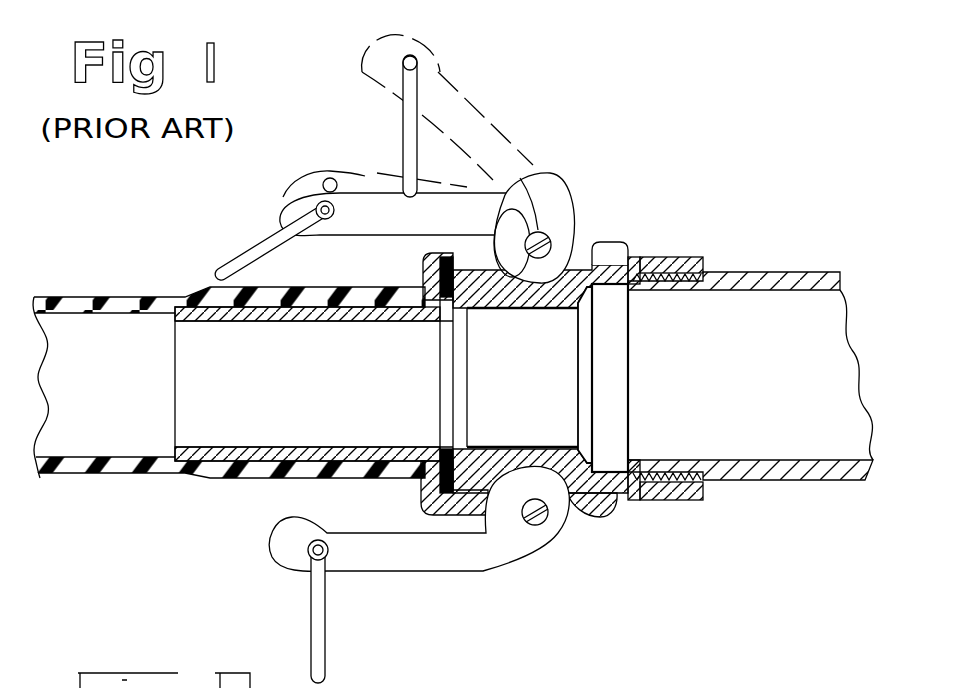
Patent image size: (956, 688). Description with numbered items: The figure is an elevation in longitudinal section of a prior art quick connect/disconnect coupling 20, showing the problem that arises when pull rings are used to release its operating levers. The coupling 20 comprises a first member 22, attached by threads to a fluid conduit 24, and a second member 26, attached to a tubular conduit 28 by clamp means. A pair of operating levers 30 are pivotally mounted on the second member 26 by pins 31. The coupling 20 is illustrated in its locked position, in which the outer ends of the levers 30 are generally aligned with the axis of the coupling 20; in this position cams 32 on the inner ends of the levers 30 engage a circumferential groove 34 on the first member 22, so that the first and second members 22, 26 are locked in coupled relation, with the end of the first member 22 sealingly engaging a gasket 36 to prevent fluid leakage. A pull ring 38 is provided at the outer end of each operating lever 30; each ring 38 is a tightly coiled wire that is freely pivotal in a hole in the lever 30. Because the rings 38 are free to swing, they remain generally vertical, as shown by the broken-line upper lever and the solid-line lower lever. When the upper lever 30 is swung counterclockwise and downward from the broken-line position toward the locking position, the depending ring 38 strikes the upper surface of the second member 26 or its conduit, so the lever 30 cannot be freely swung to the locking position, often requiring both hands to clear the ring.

The coupling 20 is at (667, 158).
The first member 22 is at (658, 258).
The fluid conduit 24 is at (797, 272).
The second member 26 is at (413, 282).
The tubular conduit 28 is at (103, 473).
The operating lever 30 is at (373, 193).
The pin 31 is at (556, 247).
The cam 32 is at (519, 308).
The circumferential groove 34 is at (530, 178).
The gasket 36 is at (438, 367).
The pull ring 38 is at (240, 262).